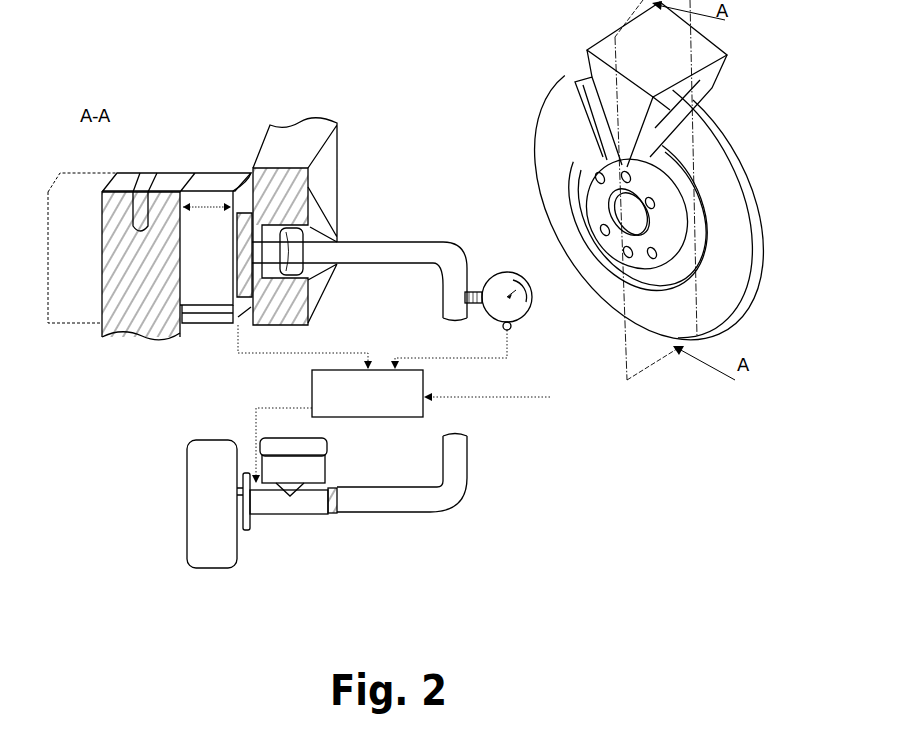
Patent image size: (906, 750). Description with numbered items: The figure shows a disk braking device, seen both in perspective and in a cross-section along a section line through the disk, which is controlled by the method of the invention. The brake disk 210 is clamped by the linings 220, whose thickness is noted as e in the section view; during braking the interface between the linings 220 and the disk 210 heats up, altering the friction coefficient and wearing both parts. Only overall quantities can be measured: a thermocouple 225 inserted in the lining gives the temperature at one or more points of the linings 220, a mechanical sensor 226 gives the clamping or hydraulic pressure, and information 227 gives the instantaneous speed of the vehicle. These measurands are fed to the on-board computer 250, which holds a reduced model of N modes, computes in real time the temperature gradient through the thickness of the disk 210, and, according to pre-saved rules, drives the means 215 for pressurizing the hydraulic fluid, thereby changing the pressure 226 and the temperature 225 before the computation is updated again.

The brake disk 210 is at (164, 191).
The linings 220 is at (223, 170).
The thermocouple 225 is at (183, 332).
The pressure sensor 226 is at (507, 272).
The speed information 227 is at (510, 398).
The on-board computer 250 is at (365, 420).
The pressurizing means 215 is at (283, 516).